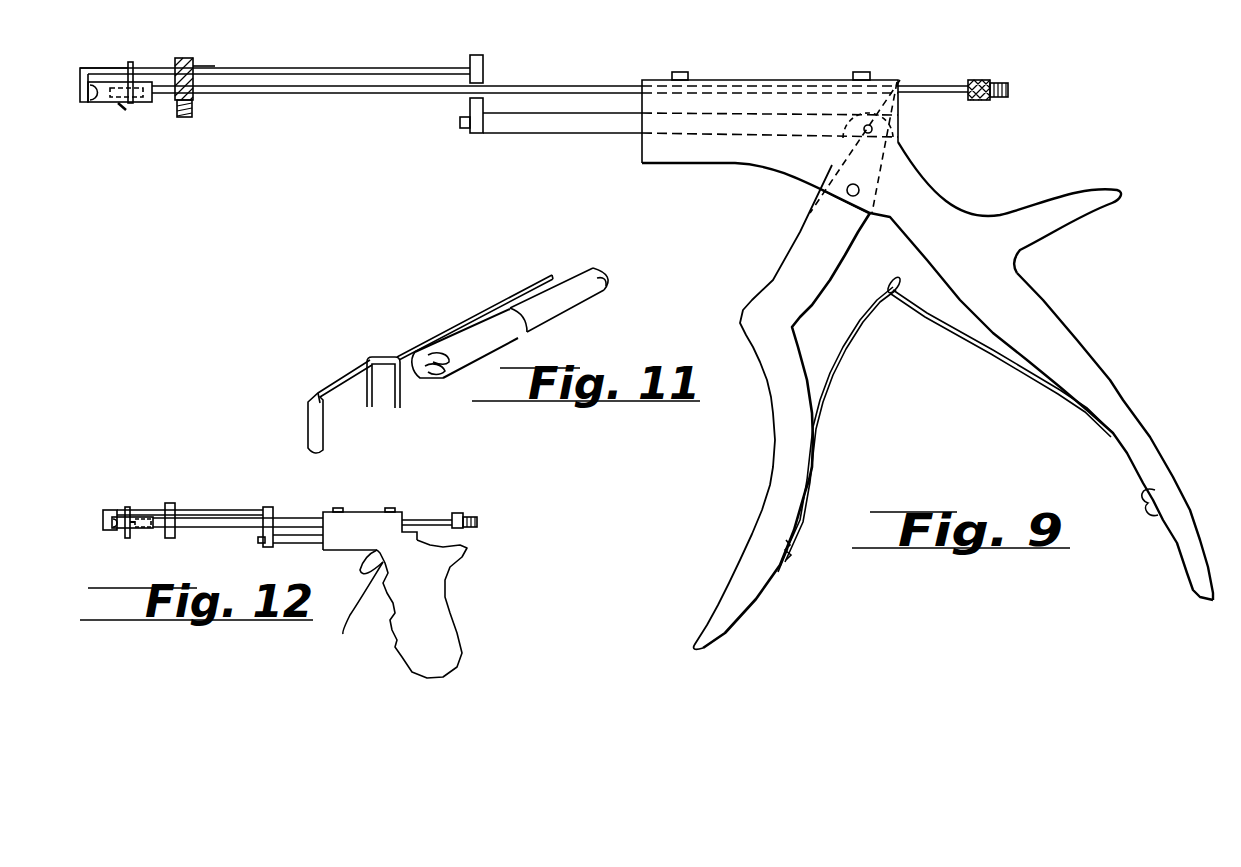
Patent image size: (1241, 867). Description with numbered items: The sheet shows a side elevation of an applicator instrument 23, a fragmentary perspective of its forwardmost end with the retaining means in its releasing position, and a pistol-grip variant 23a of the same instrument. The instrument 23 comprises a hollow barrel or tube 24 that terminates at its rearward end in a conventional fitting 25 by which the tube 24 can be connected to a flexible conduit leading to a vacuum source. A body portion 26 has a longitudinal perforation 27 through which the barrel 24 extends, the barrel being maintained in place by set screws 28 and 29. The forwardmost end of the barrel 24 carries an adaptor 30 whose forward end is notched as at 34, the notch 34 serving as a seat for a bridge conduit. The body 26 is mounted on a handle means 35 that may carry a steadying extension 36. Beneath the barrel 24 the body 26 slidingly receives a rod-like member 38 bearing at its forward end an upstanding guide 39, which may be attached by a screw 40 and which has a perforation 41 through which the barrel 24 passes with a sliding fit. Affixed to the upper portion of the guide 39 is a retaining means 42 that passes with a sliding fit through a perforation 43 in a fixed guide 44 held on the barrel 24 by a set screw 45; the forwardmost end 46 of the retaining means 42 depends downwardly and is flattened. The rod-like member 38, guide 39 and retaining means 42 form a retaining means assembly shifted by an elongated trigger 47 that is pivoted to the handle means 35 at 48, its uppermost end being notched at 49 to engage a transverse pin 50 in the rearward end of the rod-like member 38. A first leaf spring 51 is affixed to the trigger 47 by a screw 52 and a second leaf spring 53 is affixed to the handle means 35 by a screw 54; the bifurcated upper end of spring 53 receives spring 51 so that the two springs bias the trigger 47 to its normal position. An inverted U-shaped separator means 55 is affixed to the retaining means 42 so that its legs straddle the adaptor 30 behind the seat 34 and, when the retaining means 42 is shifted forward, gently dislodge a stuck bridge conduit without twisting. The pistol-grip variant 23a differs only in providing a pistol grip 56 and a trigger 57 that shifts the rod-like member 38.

In FIG. 9, the applicator instrument 23 is at (782, 76).
In FIG. 12, the pistol grip rongeur instrument 23a is at (384, 510).
In FIG. 9, the hollow barrel or tube 24 is at (310, 95).
In FIG. 11, the hollow barrel or tube 24 is at (568, 302).
In FIG. 12, the hollow barrel or tube 24 is at (188, 527).
In FIG. 9, the fitting 25 is at (985, 80).
In FIG. 12, the fitting 25 is at (458, 512).
In FIG. 9, the body portion 26 is at (738, 80).
In FIG. 12, the body portion 26 is at (352, 512).
In FIG. 9, the longitudinal perforation 27 is at (718, 82).
In FIG. 9, the set screw 28 is at (672, 72).
In FIG. 9, the set screw 29 is at (862, 72).
In FIG. 9, the adaptor 30 is at (124, 105).
In FIG. 11, the adaptor 30 is at (493, 347).
In FIG. 12, the adaptor 30 is at (146, 532).
In FIG. 9, the notch 34 is at (97, 93).
In FIG. 11, the notch 34 is at (442, 370).
In FIG. 12, the notch 34 is at (113, 508).
In FIG. 9, the handle means 35 is at (1043, 311).
In FIG. 9, the steadying extension 36 is at (1090, 186).
In FIG. 9, the rod-like member 38 is at (535, 135).
In FIG. 12, the rod-like member 38 is at (287, 543).
In FIG. 9, the upstanding guide 39 is at (480, 57).
In FIG. 12, the upstanding guide 39 is at (268, 508).
In FIG. 9, the screw 40 is at (460, 125).
In FIG. 9, the perforation 41 is at (483, 84).
In FIG. 9, the retaining means 42 is at (330, 68).
In FIG. 11, the retaining means 42 is at (448, 322).
In FIG. 12, the retaining means 42 is at (183, 510).
In FIG. 9, the perforation 43 is at (198, 64).
In FIG. 9, the fixed guide 44 is at (190, 60).
In FIG. 9, the set screw 45 is at (186, 117).
In FIG. 9, the forwardmost end of retaining means 46 is at (80, 93).
In FIG. 11, the forwardmost end of retaining means 46 is at (306, 422).
In FIG. 12, the forwardmost end of retaining means 46 is at (103, 528).
In FIG. 9, the elongated trigger 47 is at (773, 448).
In FIG. 9, the pivot 48 is at (860, 189).
In FIG. 9, the notch 49 is at (880, 132).
In FIG. 9, the transverse pin 50 is at (902, 78).
In FIG. 9, the first leaf spring 51 is at (843, 350).
In FIG. 9, the screw 52 is at (787, 560).
In FIG. 9, the second leaf spring 53 is at (993, 350).
In FIG. 9, the screw 54 is at (1148, 505).
In FIG. 9, the separator means 55 is at (132, 64).
In FIG. 11, the separator means 55 is at (370, 357).
In FIG. 12, the separator means 55 is at (128, 540).
In FIG. 12, the pistol grip 56 is at (440, 600).
In FIG. 12, the trigger 57 is at (359, 598).